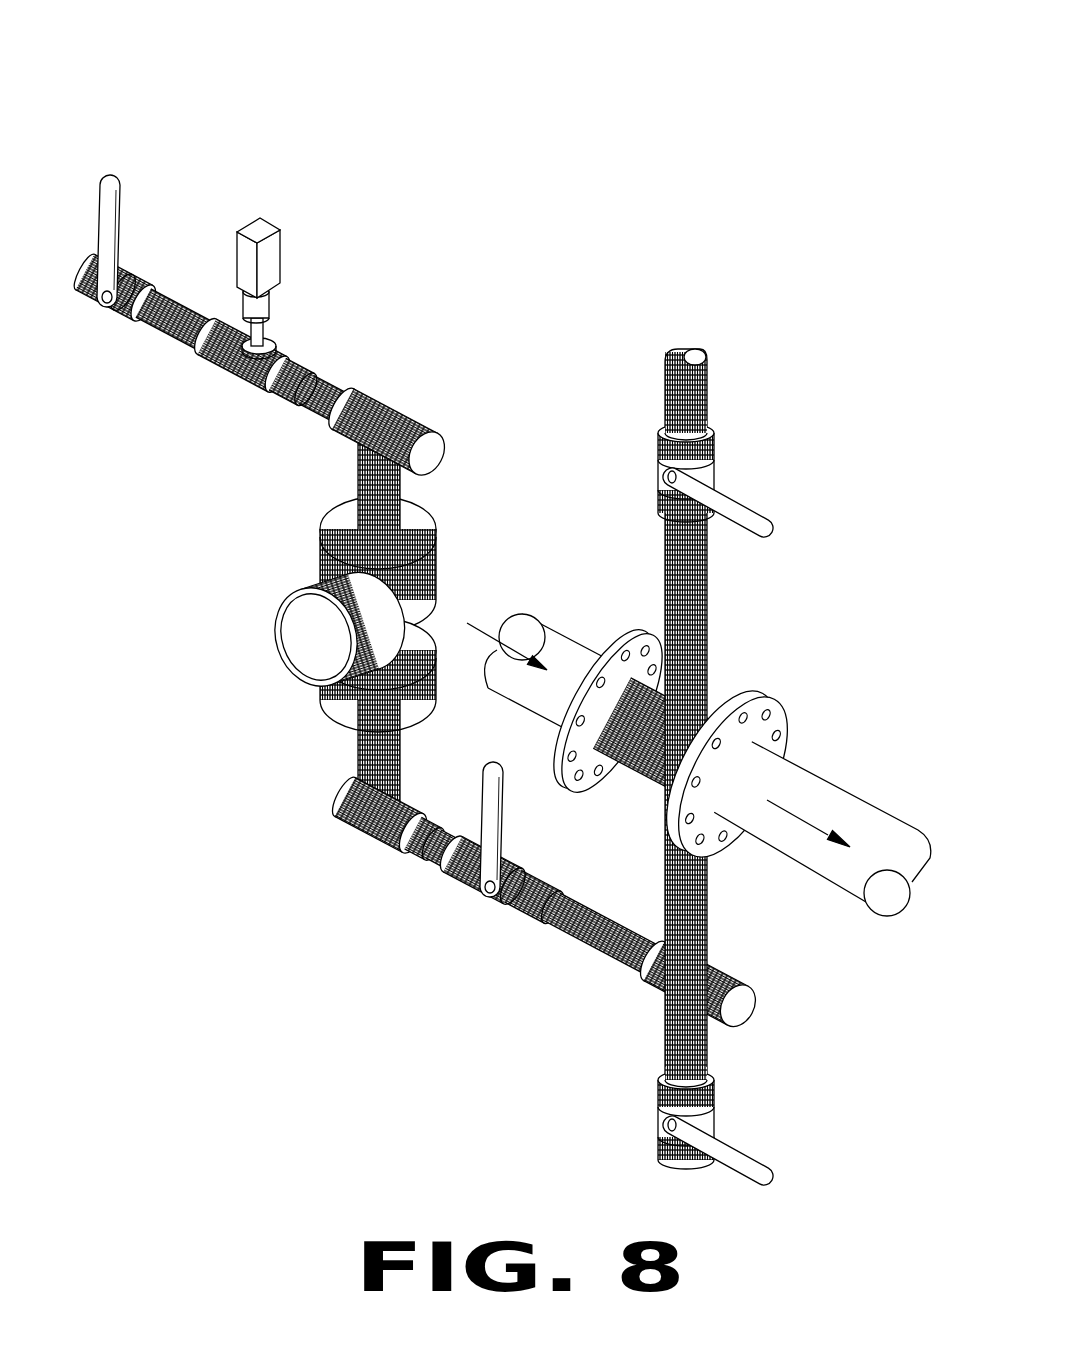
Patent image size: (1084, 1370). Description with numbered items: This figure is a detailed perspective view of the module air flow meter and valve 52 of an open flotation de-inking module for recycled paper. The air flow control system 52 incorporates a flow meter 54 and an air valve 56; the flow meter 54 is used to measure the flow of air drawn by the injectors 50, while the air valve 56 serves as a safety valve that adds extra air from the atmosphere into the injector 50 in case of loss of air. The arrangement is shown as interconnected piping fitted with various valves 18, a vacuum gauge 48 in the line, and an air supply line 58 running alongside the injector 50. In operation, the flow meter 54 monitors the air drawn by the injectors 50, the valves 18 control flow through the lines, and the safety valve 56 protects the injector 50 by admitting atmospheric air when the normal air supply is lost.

The valves 18 is at (655, 472).
The vacuum gauge 48 is at (304, 656).
The injector 50 is at (636, 644).
The air flow control system 52 is at (195, 139).
The flow meter 54 is at (280, 252).
The air valve 56 is at (113, 310).
The air supply line 58 is at (583, 947).